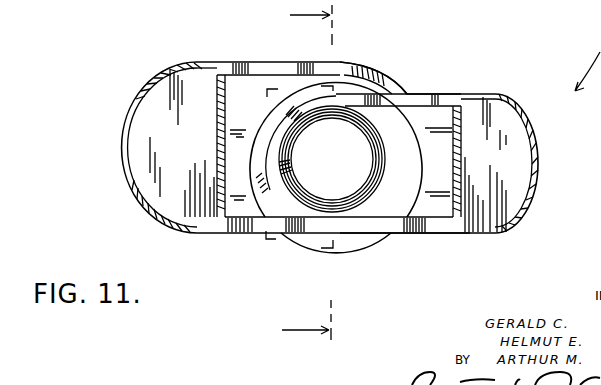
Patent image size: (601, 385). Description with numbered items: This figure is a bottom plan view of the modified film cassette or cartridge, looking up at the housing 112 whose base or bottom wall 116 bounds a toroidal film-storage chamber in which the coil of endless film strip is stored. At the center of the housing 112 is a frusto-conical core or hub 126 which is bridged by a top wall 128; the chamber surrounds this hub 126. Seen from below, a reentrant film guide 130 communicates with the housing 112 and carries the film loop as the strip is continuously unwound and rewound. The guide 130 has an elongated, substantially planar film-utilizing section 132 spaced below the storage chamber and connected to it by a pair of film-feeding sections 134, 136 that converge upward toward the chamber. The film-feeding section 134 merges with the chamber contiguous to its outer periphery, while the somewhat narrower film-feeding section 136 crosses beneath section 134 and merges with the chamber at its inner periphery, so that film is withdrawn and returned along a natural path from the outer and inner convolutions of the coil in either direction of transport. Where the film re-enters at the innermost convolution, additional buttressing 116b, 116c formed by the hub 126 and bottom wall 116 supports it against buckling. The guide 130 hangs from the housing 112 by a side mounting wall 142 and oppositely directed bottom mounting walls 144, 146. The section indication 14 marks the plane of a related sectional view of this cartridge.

The housing 112 is at (299, 250).
The base or bottom wall 116 is at (296, 240).
The buttressing 116b is at (284, 164).
The buttressing 116c is at (275, 165).
The frusto-conical core or hub 126 is at (378, 160).
The top wall 128 is at (336, 157).
The reentrant film guide 130 is at (437, 230).
The film-utilizing section 132 is at (376, 228).
The film-feeding section 134 is at (262, 67).
The film-feeding section 136 is at (417, 98).
The side mounting wall 142 is at (462, 124).
The bottom mounting wall 144 is at (143, 150).
The bottom mounting wall 146 is at (497, 125).
The section line 14 is at (299, 181).